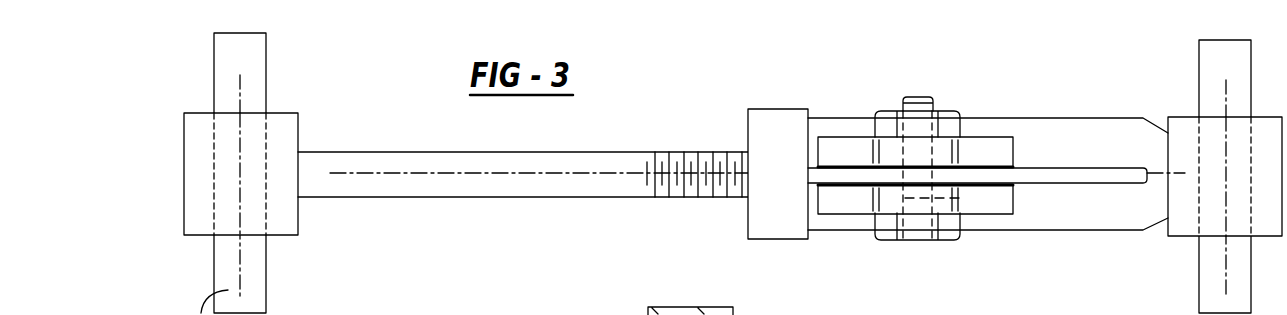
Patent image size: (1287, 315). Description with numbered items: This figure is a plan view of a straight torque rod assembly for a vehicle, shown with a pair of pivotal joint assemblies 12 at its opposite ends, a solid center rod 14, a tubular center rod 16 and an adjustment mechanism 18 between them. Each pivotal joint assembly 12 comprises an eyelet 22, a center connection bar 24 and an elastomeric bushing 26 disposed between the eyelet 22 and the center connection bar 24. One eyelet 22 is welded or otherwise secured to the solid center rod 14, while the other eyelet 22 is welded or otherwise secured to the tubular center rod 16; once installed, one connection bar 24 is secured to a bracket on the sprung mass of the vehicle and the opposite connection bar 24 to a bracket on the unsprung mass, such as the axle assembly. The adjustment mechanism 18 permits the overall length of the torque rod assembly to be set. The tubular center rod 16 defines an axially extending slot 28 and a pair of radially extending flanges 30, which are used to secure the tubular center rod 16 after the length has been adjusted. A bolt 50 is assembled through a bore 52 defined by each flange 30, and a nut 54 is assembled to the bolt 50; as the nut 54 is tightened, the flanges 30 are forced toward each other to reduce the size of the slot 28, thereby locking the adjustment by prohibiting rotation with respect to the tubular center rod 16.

The pivotal joint assembly 12 is at (302, 55).
The solid center rod 14 is at (427, 192).
The tubular center rod 16 is at (1091, 222).
The adjustment mechanism 18 is at (738, 95).
The eyelet 22 is at (184, 143).
The center connection bar 24 is at (1207, 295).
The elastomeric bushing 26 is at (198, 192).
The slot 28 is at (1073, 172).
The flange 30 is at (842, 223).
The bolt 50 is at (918, 241).
The bore 52 is at (962, 198).
The nut 54 is at (947, 128).